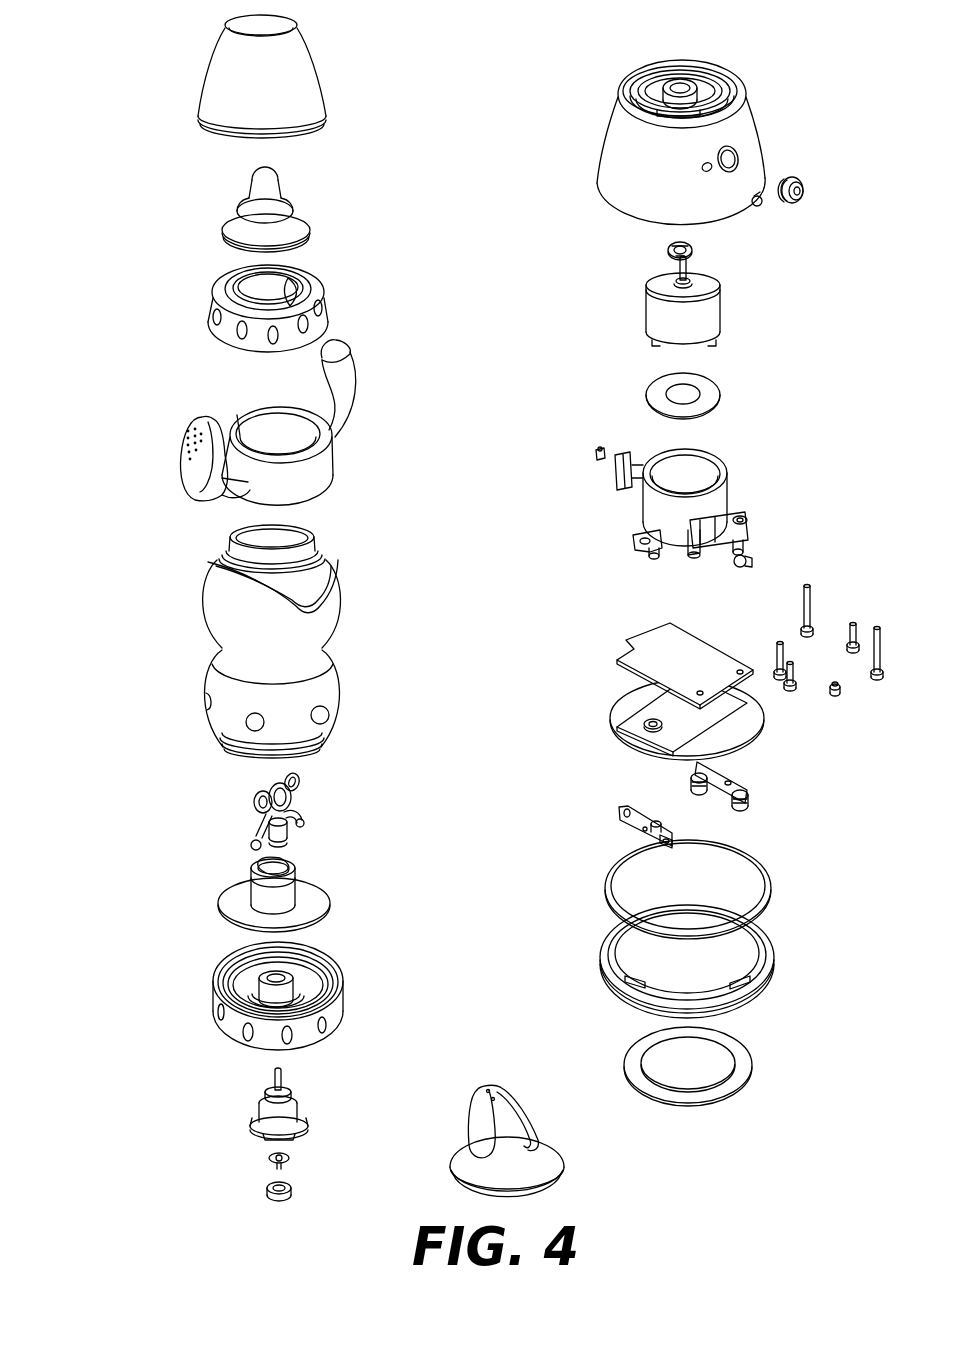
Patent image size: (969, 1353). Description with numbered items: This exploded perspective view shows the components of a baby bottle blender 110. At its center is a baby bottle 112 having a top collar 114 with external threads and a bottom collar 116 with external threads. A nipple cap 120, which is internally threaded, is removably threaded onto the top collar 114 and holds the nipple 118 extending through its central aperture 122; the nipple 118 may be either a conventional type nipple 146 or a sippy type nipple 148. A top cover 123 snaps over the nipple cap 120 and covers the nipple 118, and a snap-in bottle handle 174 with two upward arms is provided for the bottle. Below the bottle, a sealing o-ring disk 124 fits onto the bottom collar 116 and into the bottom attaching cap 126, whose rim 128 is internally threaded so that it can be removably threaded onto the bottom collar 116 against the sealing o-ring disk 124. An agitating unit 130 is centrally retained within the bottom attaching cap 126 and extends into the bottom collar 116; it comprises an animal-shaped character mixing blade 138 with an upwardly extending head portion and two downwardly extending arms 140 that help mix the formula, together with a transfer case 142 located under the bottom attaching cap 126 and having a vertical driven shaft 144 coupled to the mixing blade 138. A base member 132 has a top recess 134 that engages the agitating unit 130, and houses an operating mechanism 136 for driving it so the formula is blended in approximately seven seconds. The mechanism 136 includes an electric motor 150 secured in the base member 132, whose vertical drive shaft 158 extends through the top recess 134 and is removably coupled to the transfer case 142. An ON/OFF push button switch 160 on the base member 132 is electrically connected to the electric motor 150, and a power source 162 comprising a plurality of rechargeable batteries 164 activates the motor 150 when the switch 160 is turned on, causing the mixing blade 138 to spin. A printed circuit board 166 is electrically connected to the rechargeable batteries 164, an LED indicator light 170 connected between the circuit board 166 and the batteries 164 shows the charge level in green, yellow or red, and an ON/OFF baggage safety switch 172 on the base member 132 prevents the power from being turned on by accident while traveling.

The baby bottle blender 110 is at (153, 45).
The baby bottle 112 is at (249, 620).
The top collar 114 is at (313, 543).
The bottom collar 116 is at (220, 742).
The nipple 118 is at (385, 676).
The nipple cap 120 is at (256, 301).
The central aperture 122 is at (288, 284).
The top cover 123 is at (323, 72).
The sealing o-ring disk 124 is at (226, 893).
The bottom attaching cap 126 is at (267, 1010).
The rim 128 is at (346, 1004).
The agitating unit 130 is at (260, 796).
The base member 132 is at (720, 112).
The top recess 134 is at (685, 90).
The operating mechanism 136 is at (679, 315).
The animal-shaped character mixing blade 138 is at (300, 783).
The downwardly extending arms 140 is at (305, 820).
The transfer case 142 is at (258, 1128).
The vertical driven shaft 144 is at (287, 1085).
The conventional type nipple 146 is at (280, 202).
The sippy type nipple 148 is at (474, 1124).
The electric motor 150 is at (663, 320).
The vertical drive shaft 158 is at (683, 287).
The ON/OFF push button switch 160 is at (645, 498).
The power source 162 is at (647, 715).
The rechargeable batteries 164 is at (639, 695).
The printed circuit board 166 is at (653, 640).
The LED indicator light 170 is at (747, 559).
The ON/OFF baggage safety switch 172 is at (613, 466).
The snap-in bottle handle 174 is at (348, 352).